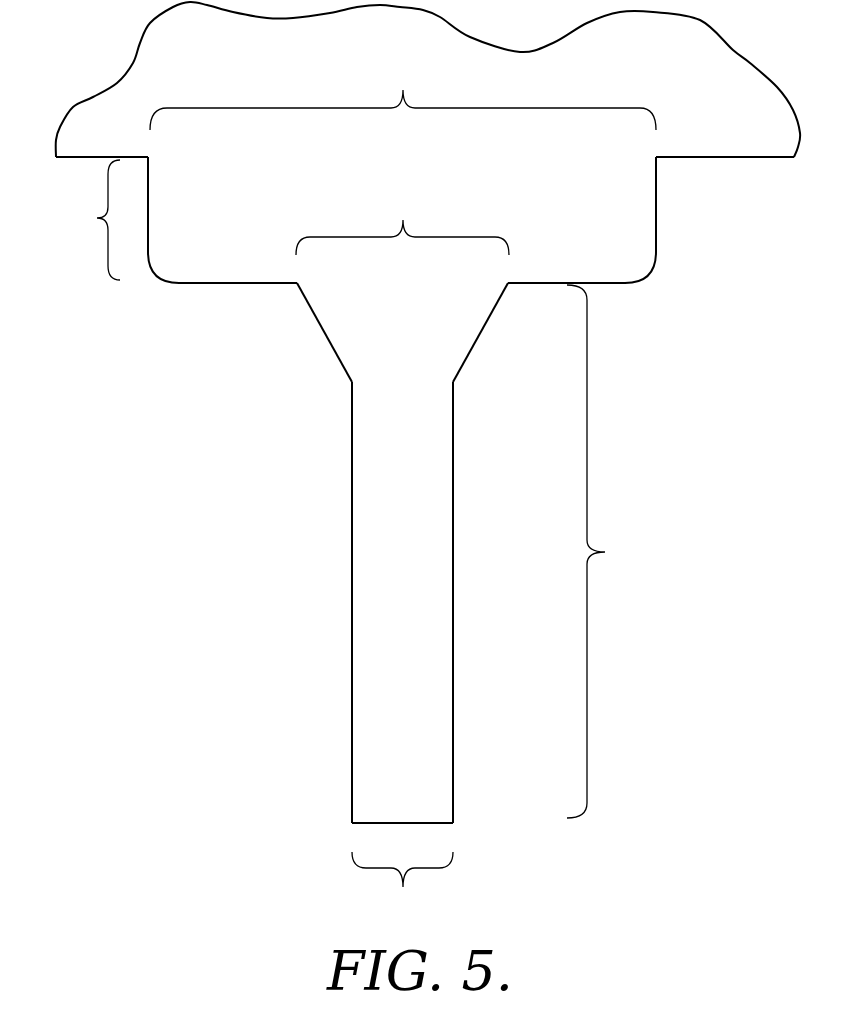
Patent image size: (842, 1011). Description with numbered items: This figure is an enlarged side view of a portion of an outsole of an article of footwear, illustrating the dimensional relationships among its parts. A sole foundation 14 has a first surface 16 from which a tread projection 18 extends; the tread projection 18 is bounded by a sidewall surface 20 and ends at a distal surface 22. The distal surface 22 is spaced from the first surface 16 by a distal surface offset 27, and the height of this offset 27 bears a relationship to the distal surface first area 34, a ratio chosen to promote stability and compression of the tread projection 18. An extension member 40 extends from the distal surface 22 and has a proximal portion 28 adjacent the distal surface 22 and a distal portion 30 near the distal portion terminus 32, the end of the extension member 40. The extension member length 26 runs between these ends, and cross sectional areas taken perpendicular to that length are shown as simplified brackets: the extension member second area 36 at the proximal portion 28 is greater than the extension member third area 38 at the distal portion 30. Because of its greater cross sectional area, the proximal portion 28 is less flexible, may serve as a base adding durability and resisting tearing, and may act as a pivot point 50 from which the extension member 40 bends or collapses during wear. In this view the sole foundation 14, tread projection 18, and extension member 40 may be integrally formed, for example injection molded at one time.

The sole foundation 14 is at (732, 77).
The first surface 16 is at (80, 158).
The tread projection 18 is at (642, 222).
The sidewall surface 20 is at (657, 255).
The distal surface 22 is at (219, 284).
The extension member length 26 is at (605, 551).
The distal surface offset 27 is at (97, 218).
The proximal portion 28 is at (336, 322).
The distal portion 30 is at (367, 692).
The distal portion terminus 32 is at (357, 823).
The distal surface first area 34 is at (403, 95).
The extension member second area 36 is at (402, 221).
The extension member third area 38 is at (402, 887).
The extension member 40 is at (361, 540).
The pivot point 50 is at (343, 386).